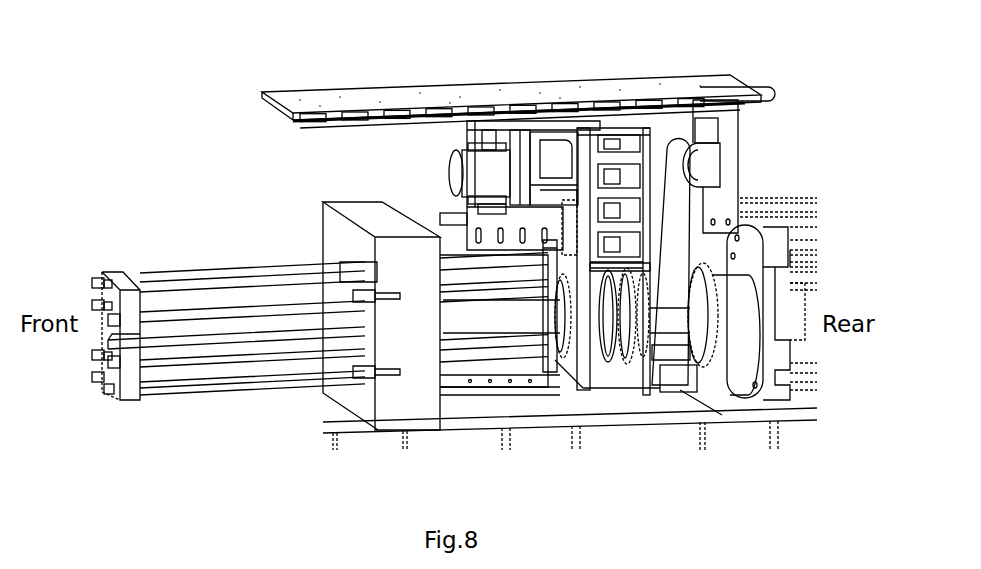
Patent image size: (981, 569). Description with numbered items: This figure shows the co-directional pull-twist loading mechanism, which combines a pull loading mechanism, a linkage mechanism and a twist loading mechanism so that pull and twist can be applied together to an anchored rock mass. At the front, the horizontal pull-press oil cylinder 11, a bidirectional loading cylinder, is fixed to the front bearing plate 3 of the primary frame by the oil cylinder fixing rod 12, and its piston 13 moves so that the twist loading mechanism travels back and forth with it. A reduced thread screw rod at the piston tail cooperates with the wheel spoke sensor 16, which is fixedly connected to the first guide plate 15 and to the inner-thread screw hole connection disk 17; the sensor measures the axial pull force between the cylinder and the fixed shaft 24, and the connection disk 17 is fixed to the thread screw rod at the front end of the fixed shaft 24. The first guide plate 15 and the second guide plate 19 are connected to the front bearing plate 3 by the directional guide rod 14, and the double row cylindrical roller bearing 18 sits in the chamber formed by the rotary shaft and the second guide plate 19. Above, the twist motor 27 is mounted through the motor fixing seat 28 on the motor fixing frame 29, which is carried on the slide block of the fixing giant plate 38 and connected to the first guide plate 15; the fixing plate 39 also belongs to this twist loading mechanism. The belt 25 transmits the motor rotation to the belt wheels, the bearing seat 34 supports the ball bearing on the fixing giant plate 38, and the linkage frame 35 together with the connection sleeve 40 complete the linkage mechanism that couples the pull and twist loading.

The front bearing plate 3 is at (414, 412).
The horizontal pull-press oil cylinder 11 is at (235, 352).
The oil cylinder fixing rod 12 is at (265, 335).
The piston 13 is at (472, 322).
The directional guide rod 14 is at (502, 263).
The first guide plate 15 is at (557, 357).
The wheel spoke sensor 16 is at (603, 335).
The inner-thread screw hole connection disk 17 is at (622, 338).
The double row cylindrical roller bearing 18 is at (642, 347).
The second guide plate 19 is at (655, 353).
The fixed shaft 24 is at (705, 300).
The belt 25 is at (677, 295).
The twist motor 27 is at (490, 168).
The motor fixing seat 28 is at (548, 170).
The motor fixing frame 29 is at (518, 170).
The bearing seat 34 is at (700, 157).
The linkage frame 35 is at (593, 157).
The fixing giant plate 38 is at (413, 97).
The fixing plate 39 is at (503, 220).
The connection sleeve 40 is at (742, 322).